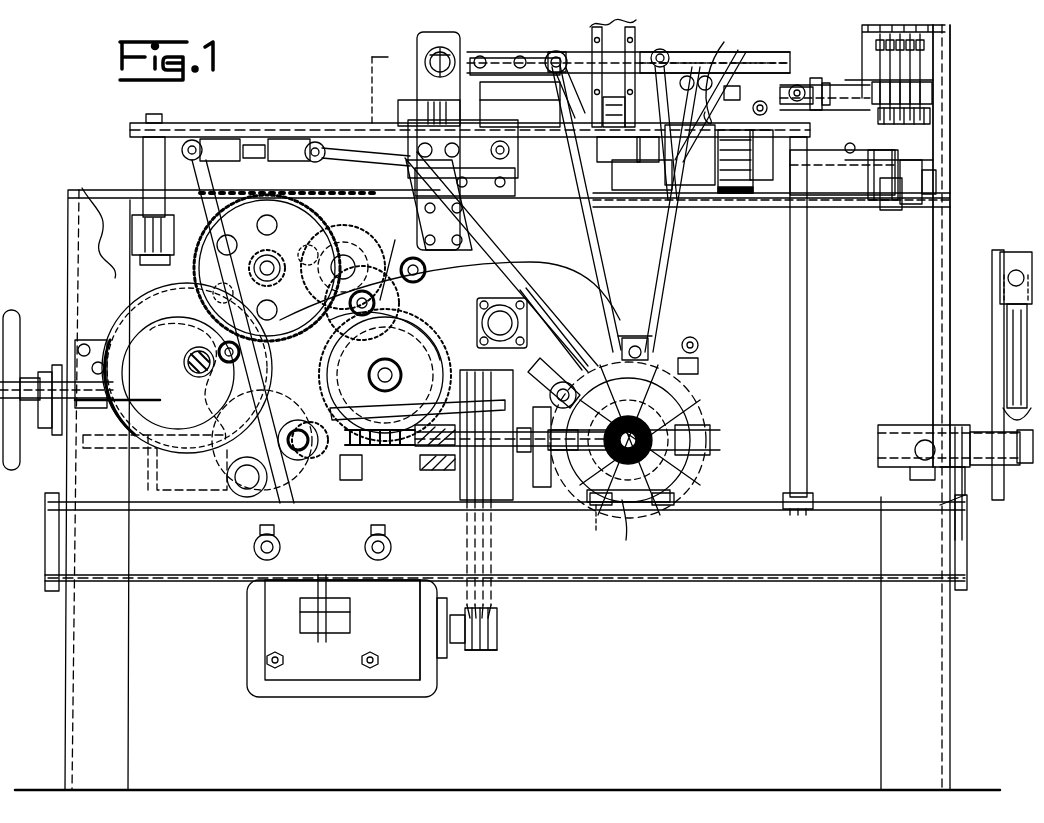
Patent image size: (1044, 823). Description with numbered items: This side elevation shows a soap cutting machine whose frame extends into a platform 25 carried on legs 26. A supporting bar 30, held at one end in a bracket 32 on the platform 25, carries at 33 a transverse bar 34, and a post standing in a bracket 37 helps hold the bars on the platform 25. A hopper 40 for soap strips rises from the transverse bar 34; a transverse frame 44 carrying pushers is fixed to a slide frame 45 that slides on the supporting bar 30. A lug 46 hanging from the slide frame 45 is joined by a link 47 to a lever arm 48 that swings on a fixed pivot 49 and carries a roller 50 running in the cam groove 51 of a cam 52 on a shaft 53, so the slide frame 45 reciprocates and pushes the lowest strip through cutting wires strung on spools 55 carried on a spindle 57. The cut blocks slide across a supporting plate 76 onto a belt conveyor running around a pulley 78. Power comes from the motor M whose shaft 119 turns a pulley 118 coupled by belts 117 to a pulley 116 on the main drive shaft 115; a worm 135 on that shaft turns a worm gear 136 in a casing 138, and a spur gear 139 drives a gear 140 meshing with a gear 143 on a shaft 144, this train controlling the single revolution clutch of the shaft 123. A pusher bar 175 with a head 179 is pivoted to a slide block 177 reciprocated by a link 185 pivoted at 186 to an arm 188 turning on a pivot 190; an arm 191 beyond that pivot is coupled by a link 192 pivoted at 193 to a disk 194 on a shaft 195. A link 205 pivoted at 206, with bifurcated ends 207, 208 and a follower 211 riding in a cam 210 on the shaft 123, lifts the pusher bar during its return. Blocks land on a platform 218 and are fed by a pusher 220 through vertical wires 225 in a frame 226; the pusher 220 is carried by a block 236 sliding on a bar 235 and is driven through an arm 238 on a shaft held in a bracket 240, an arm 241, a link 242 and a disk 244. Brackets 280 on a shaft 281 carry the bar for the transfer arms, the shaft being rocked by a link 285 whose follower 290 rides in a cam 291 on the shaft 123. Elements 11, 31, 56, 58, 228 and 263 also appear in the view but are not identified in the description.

The machine section line 11 is at (390, 87).
The platform 25 is at (866, 496).
The legs 26 is at (130, 656).
The supporting bar 30 is at (212, 110).
The column 31 is at (143, 160).
The bracket 32 is at (140, 220).
The securing point 33 is at (610, 166).
The transverse bar 34 is at (648, 162).
The bracket 37 is at (814, 500).
The hopper 40 is at (630, 34).
The transverse frame 44 is at (418, 122).
The slide frame 45 is at (362, 124).
The lug 46 is at (314, 127).
The link 47 is at (310, 165).
The lever arm 48 is at (210, 182).
The fixed pivot 49 is at (235, 472).
The cam follower 50 is at (196, 336).
The cam groove 51 is at (135, 412).
The cam 52 is at (135, 444).
The shaft 53 is at (186, 352).
The spools 55 is at (670, 54).
The column 56 is at (690, 168).
The spindle 57 is at (662, 52).
The bracket 58 is at (636, 190).
The supporting plate 76 is at (718, 140).
The pulley 78 is at (708, 200).
The main drive shaft 115 is at (445, 470).
The pulley 116 is at (495, 520).
The belts 117 is at (480, 610).
The pulley 118 is at (488, 648).
The motor shaft 119 is at (496, 626).
The shaft 123 is at (626, 545).
The worm 135 is at (370, 465).
The worm gear 136 is at (418, 280).
The casing 138 is at (488, 262).
The spur gear 139 is at (316, 460).
The gear 140 is at (466, 238).
The gear 143 is at (350, 178).
The shaft 144 is at (318, 226).
The pusher bar 175 is at (740, 56).
The slide block 177 is at (512, 183).
The head 179 is at (740, 28).
The link 185 is at (450, 58).
The pivot 186 is at (510, 154).
The arm 188 is at (490, 256).
The pivot 190 is at (528, 312).
The arm 191 is at (540, 348).
The link 192 is at (554, 360).
The pivot 193 is at (290, 516).
The disk 194 is at (275, 520).
The shaft 195 is at (348, 482).
The link 205 is at (590, 246).
The pivot 206 is at (558, 56).
The bifurcated end 207 is at (598, 516).
The bifurcated end 208 is at (666, 515).
The cam 210 is at (694, 392).
The follower 211 is at (650, 346).
The platform 218 is at (856, 200).
The pusher 220 is at (930, 116).
The vertical wires 225 is at (914, 72).
The frame 226 is at (945, 38).
The needle bar 228 is at (932, 88).
The bar 235 is at (890, 212).
The block 236 is at (892, 205).
The arm 238 is at (933, 347).
The bracket 240 is at (884, 430).
The arm 241 is at (992, 262).
The link 242 is at (1005, 375).
The disk 244 is at (998, 490).
The hub 263 is at (330, 195).
The brackets 280 is at (814, 82).
The shaft 281 is at (794, 84).
The link 285 is at (658, 262).
The cam follower 290 is at (704, 343).
The cam 291 is at (700, 366).
The motor M is at (418, 696).